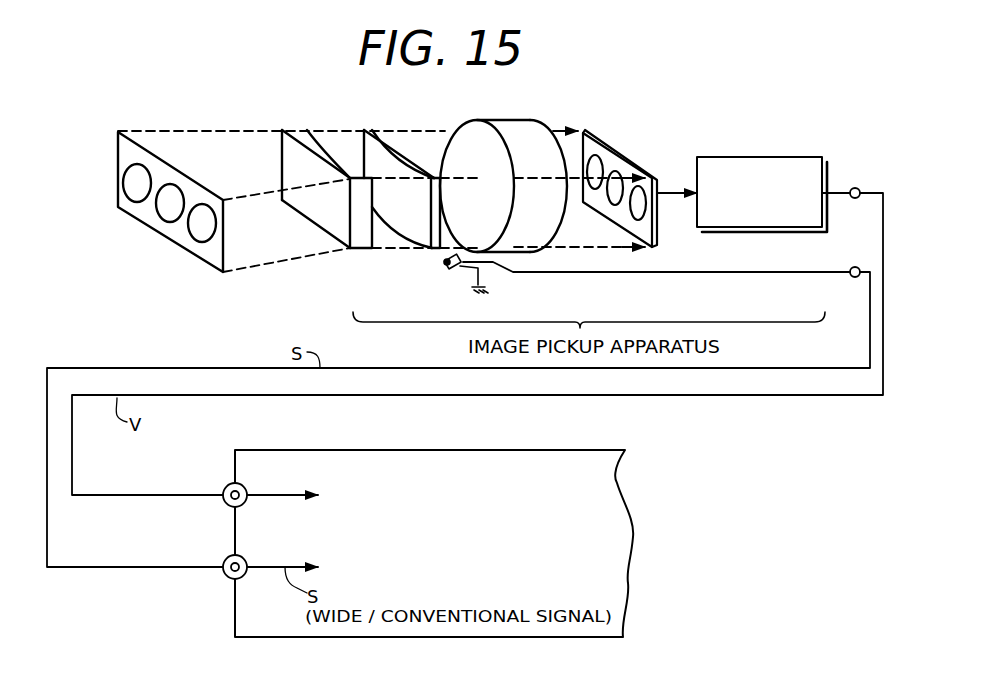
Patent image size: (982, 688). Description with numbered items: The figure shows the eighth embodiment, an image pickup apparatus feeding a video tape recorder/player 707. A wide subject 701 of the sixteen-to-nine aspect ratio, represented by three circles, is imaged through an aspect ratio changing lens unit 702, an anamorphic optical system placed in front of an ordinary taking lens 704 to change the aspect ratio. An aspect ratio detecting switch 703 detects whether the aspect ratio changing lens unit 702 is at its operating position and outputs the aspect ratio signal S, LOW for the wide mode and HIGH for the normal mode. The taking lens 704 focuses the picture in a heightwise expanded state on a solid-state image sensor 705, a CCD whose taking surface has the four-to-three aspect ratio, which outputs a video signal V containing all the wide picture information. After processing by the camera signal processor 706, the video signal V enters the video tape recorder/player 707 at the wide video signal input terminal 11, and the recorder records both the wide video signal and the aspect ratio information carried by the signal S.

The wide subject 701 is at (143, 222).
The aspect ratio changing lens unit 702 is at (340, 257).
The aspect ratio detecting switch 703 is at (452, 267).
The taking lens 704 is at (533, 252).
The solid-state image sensor 705 is at (632, 157).
The camera signal processor 706 is at (718, 157).
The video tape recorder/player 707 is at (620, 467).
The wide video signal input terminal 11 is at (224, 489).